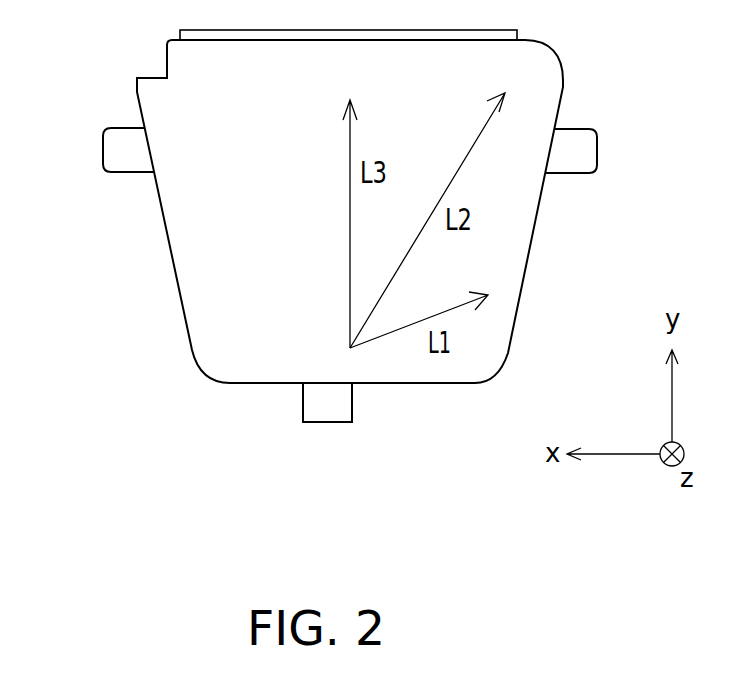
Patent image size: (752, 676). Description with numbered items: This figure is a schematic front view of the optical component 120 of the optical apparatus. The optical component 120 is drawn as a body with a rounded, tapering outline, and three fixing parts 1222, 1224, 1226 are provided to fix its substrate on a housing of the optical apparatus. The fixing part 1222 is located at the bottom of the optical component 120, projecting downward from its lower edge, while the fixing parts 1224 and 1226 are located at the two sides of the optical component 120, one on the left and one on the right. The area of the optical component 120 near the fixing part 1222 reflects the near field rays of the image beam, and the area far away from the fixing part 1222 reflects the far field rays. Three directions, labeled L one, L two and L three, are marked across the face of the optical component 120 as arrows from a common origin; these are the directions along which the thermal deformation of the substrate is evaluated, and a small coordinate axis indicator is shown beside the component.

The optical component 120 is at (200, 65).
The fixing part 1222 is at (330, 410).
The fixing part 1224 is at (135, 160).
The fixing part 1226 is at (563, 162).